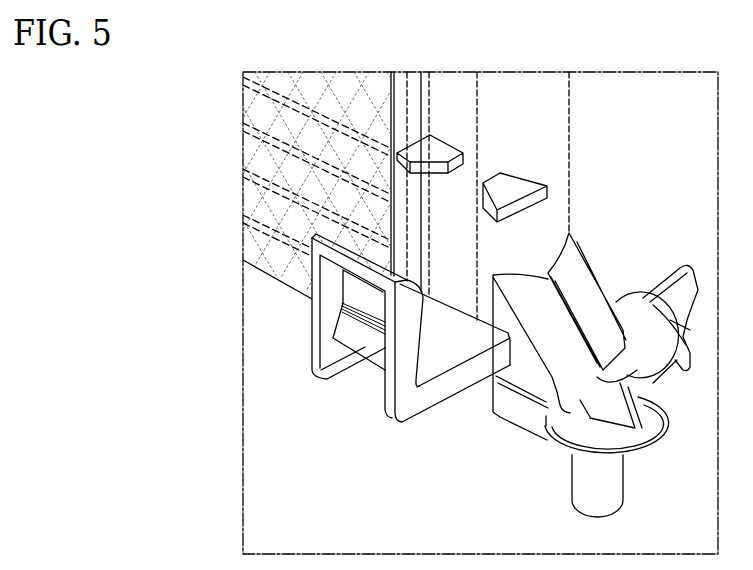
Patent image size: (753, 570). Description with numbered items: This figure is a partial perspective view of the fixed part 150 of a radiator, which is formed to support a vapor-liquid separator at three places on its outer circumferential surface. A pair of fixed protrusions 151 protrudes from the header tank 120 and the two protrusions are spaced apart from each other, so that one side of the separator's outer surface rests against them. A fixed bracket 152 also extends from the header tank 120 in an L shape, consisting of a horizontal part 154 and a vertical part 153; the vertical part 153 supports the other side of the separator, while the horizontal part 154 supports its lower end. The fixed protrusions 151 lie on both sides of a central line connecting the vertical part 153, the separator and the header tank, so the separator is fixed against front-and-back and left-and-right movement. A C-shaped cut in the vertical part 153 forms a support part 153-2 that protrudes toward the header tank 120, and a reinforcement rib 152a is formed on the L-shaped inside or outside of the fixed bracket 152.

The 1-2-th header tank 120 is at (557, 210).
The fixed part 150 is at (400, 325).
The fixed protrusions 151 is at (443, 148).
The fixed bracket 152 is at (336, 372).
The reinforcement rib 152a is at (345, 316).
The vertical part 153 is at (364, 358).
The support part 153-2 is at (352, 282).
The horizontal part 154 is at (435, 355).